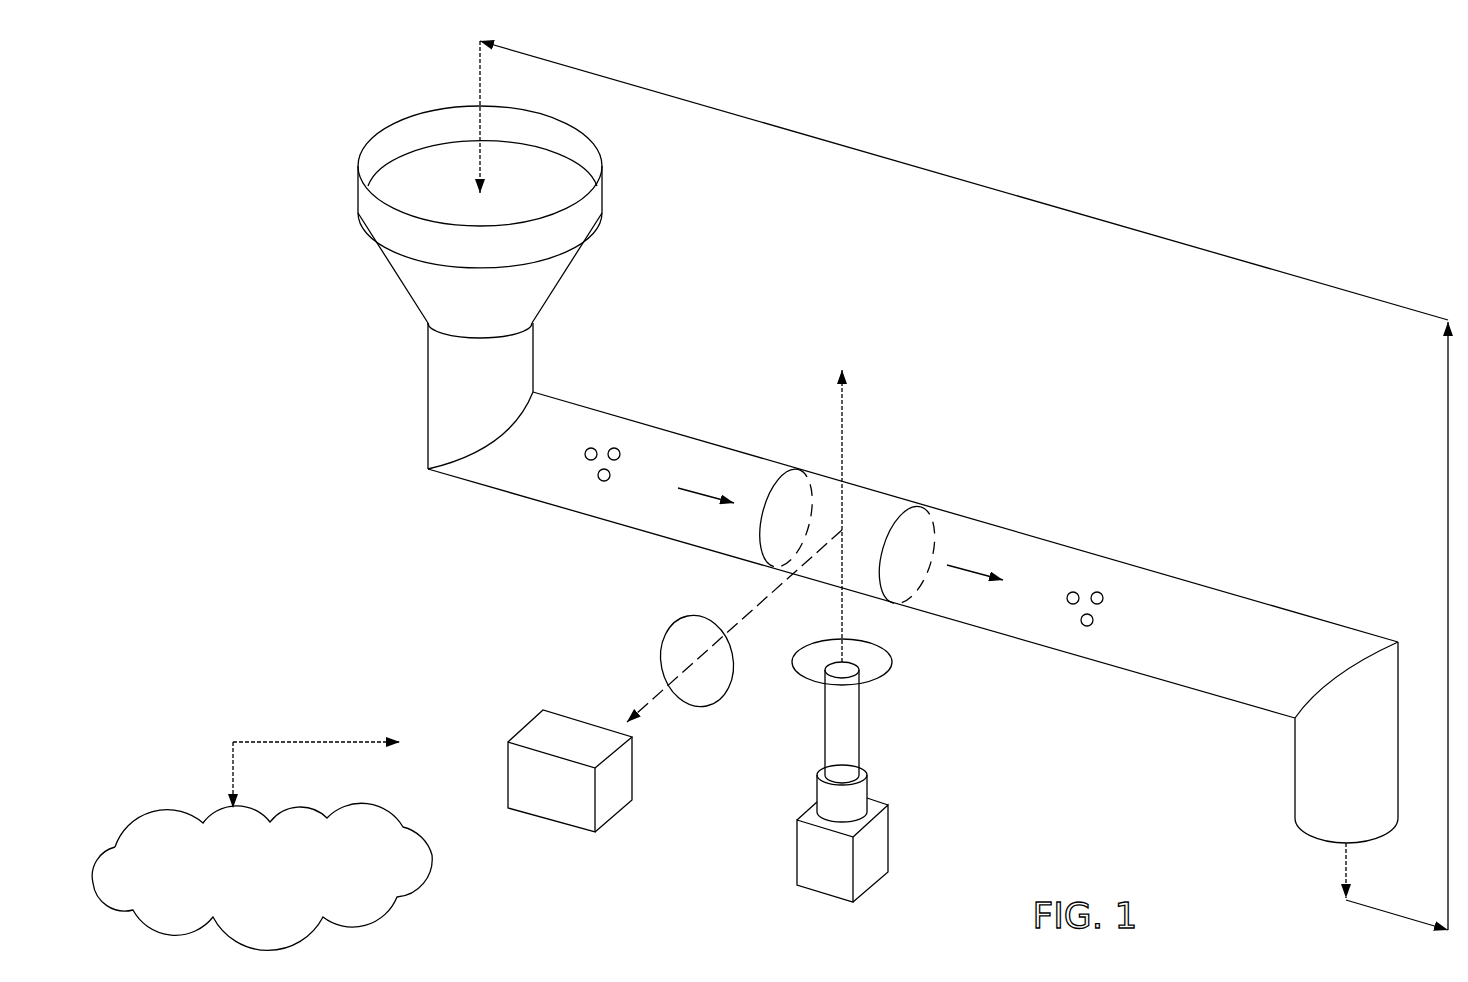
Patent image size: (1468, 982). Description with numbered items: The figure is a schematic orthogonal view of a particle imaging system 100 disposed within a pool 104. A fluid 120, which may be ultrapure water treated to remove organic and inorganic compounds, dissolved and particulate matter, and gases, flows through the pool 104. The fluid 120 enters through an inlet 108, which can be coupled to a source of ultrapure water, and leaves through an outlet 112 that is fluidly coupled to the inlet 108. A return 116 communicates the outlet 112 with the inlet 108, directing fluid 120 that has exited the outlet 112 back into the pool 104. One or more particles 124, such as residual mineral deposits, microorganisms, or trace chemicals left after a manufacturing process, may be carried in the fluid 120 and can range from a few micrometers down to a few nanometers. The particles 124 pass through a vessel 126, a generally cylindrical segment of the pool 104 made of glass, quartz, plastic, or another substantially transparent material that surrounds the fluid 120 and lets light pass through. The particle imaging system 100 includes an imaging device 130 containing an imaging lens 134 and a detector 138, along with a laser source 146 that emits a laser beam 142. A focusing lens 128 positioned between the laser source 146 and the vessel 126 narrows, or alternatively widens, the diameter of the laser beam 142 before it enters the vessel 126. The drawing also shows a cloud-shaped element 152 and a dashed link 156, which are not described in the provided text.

The particle imaging system 100 is at (1270, 180).
The pool 104 is at (428, 375).
The inlet 108 is at (393, 142).
The outlet 112 is at (1313, 837).
The return 116 is at (1001, 190).
The fluid 120 is at (980, 553).
The particle 124 is at (636, 455).
The vessel 126 is at (878, 518).
The focusing lens 128 is at (893, 660).
The imaging device 130 is at (552, 663).
The imaging lens 134 is at (667, 620).
The detector 138 is at (508, 773).
The laser beam 142 is at (859, 728).
The laser source 146 is at (888, 842).
The cloud / remote computing network 152 is at (285, 885).
The data communication link 156 is at (315, 742).